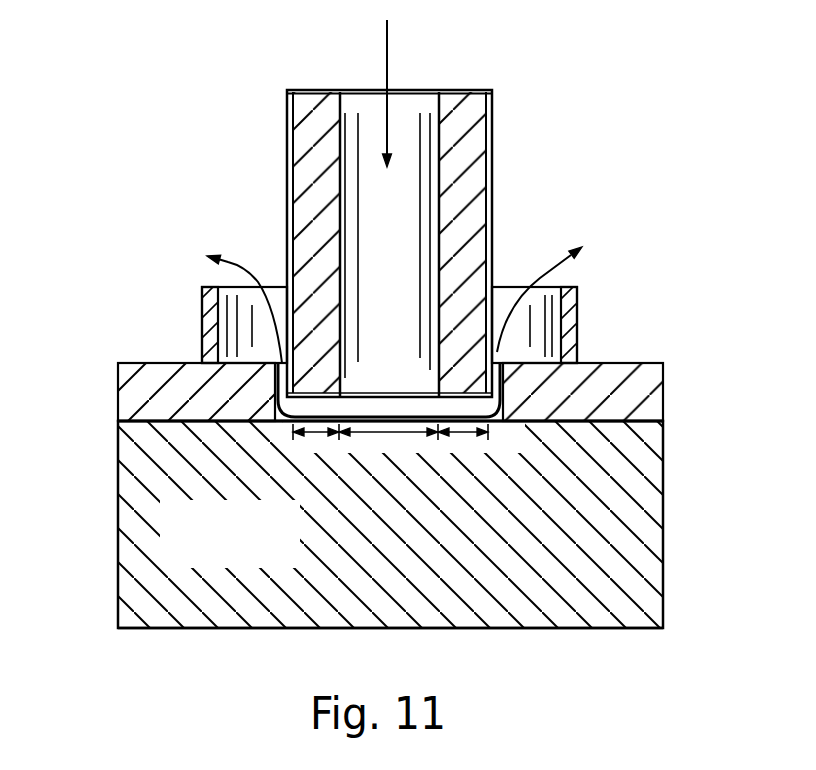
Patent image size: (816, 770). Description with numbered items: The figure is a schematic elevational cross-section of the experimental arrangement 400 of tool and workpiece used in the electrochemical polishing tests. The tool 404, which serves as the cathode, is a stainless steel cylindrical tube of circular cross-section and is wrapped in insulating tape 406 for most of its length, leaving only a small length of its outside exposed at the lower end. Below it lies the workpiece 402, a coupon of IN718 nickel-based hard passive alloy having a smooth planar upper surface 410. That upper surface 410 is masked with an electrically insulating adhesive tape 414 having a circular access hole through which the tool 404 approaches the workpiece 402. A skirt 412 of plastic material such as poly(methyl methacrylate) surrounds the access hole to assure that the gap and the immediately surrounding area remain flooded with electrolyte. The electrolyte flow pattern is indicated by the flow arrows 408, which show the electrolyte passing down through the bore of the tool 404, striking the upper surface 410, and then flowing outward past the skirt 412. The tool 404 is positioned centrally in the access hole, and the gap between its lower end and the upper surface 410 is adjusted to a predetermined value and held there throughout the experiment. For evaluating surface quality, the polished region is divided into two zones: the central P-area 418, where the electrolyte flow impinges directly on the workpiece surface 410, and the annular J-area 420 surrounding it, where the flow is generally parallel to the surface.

The processing assembly 400 is at (576, 56).
The workpiece 402 is at (203, 549).
The tool 404 is at (317, 90).
The insulating tape 406 is at (288, 143).
The flow arrows 408 is at (392, 40).
The upper surface 410 is at (505, 417).
The skirt 412 is at (578, 291).
The electrically insulating adhesive tape 414 is at (155, 362).
The P-area 418 is at (607, 628).
The J-area 420 is at (307, 445).